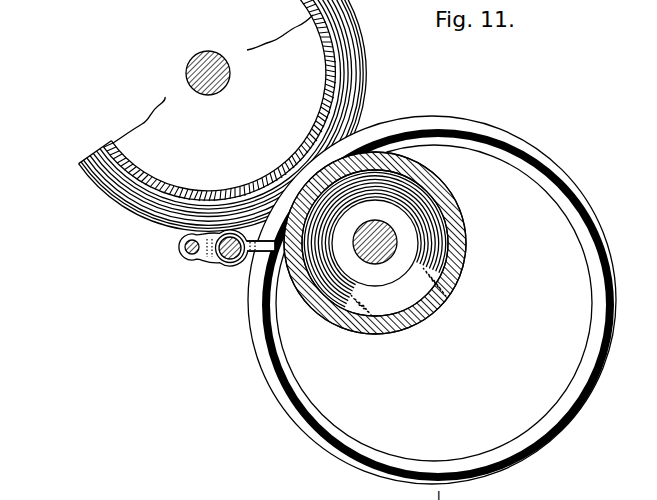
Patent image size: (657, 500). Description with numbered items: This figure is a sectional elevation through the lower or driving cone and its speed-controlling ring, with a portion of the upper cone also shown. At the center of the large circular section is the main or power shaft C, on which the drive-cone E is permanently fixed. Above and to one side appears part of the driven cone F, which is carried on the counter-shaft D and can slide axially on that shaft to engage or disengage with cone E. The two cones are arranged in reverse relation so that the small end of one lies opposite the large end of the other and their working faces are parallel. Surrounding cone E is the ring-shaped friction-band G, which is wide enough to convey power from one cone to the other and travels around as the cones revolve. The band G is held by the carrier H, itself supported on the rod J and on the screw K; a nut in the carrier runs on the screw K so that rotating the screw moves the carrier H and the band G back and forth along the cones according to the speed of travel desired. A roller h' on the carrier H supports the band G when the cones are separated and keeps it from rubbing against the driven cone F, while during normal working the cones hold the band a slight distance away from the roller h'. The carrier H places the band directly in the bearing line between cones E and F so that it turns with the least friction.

The main or power shaft C is at (396, 243).
The counter-shaft D is at (229, 82).
The drive-cone E is at (462, 248).
The driven cone F is at (362, 92).
The friction-band G is at (562, 182).
The carrier H is at (186, 259).
The rod J is at (180, 253).
The screw K is at (215, 262).
The roller h' is at (247, 273).